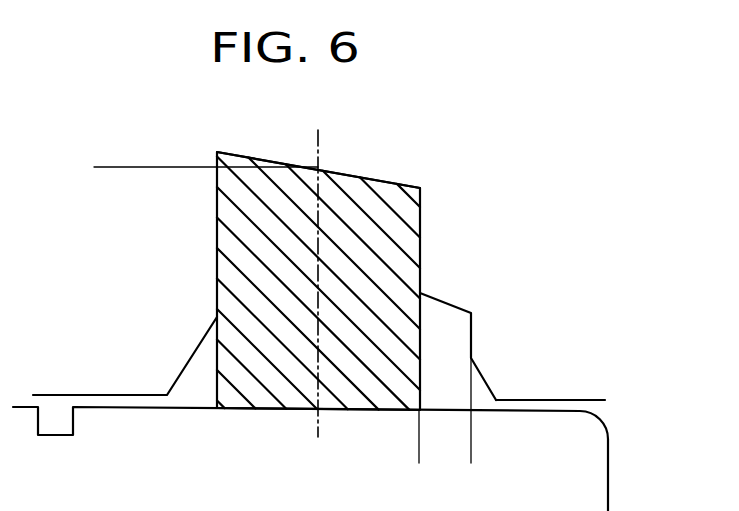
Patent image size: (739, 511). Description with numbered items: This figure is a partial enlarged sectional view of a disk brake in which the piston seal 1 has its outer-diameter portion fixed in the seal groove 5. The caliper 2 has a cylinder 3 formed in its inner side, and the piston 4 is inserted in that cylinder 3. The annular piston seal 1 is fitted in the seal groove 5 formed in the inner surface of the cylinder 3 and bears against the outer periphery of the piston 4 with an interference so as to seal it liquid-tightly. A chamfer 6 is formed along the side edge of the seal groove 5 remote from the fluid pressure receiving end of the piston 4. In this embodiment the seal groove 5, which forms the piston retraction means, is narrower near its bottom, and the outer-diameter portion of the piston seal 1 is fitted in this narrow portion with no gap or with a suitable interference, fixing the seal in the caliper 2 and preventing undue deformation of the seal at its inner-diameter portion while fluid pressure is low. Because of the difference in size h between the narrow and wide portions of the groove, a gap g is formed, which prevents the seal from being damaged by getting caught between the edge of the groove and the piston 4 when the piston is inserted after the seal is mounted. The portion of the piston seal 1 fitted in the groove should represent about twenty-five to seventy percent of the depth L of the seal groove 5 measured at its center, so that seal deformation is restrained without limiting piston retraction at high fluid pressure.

The piston seal 1 is at (414, 212).
The caliper 2 is at (503, 370).
The cylinder 3 is at (566, 402).
The piston 4 is at (573, 478).
The seal groove 5 is at (348, 176).
The chamfer 6 is at (197, 351).
The gap g is at (443, 332).
The difference in size h is at (500, 458).
The depth of the seal groove L is at (103, 167).